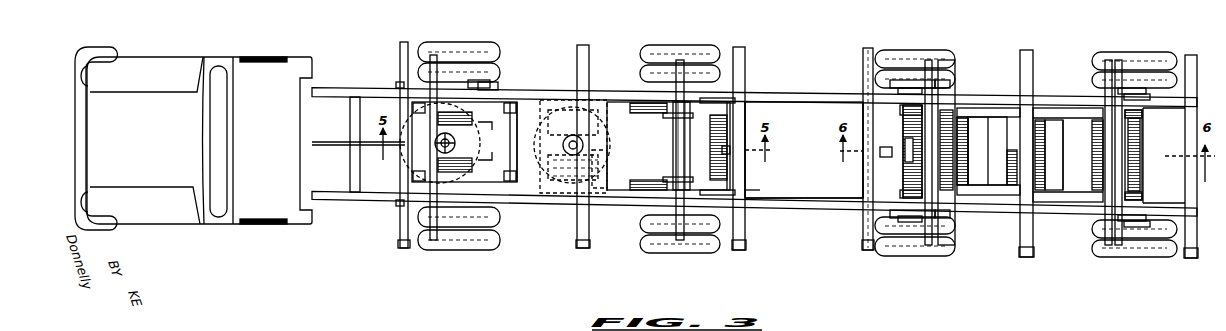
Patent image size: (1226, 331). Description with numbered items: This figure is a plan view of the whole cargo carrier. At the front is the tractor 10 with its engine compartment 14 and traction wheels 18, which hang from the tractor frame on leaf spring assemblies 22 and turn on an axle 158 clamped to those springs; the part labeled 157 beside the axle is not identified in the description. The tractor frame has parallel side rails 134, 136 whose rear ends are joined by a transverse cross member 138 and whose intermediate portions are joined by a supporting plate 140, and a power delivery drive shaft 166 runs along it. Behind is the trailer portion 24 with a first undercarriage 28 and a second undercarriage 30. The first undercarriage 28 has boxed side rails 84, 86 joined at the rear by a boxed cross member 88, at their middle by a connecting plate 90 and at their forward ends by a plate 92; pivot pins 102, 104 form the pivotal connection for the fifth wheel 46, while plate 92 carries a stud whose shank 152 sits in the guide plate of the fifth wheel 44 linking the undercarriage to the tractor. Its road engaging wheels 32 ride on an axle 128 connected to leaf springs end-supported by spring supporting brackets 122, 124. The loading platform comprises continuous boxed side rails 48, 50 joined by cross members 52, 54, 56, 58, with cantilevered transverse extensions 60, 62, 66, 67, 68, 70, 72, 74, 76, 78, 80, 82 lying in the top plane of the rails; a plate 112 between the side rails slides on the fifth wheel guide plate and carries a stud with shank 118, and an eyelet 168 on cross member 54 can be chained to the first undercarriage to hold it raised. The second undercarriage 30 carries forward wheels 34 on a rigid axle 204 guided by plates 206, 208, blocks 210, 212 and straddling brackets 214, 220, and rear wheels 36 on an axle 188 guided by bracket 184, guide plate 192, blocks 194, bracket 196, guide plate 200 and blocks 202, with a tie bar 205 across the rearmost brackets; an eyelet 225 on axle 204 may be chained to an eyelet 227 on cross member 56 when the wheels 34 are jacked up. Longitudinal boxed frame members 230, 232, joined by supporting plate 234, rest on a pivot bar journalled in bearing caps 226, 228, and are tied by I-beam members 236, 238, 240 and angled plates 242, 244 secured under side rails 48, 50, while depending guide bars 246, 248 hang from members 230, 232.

The tractor 10 is at (212, 54).
The engine compartment 14 is at (95, 111).
The traction wheels 18 is at (482, 46).
The spring suspension mechanisms 22 is at (490, 80).
The trailer portion 24 is at (792, 210).
The first undercarriage 28 is at (496, 100).
The second undercarriage 30 is at (1055, 108).
The road engaging wheels 32 is at (678, 50).
The road engaging wheels 34 is at (923, 255).
The road engaging wheels 36 is at (1146, 250).
The fifth wheel 44 is at (474, 172).
The fifth wheel 46 is at (665, 114).
The side rail 48 is at (806, 102).
The side rail 50 is at (822, 200).
The transverse cross member 52 is at (402, 176).
The transverse cross member 54 is at (748, 190).
The transverse cross member 56 is at (860, 120).
The transverse cross member 58 is at (1184, 116).
The transverse extension 60 is at (404, 42).
The transverse extension 62 is at (583, 45).
The transverse extension 66 is at (868, 48).
The transverse extension 67 is at (744, 50).
The transverse extension 68 is at (1028, 56).
The transverse extension 70 is at (1192, 55).
The transverse extension 72 is at (403, 248).
The transverse extension 74 is at (578, 248).
The transverse extension 76 is at (742, 250).
The transverse extension 78 is at (866, 250).
The transverse extension 80 is at (1026, 257).
The transverse extension 82 is at (1190, 258).
The boxed side rail 84 is at (620, 110).
The boxed side rail 86 is at (623, 190).
The transverse cross member 88 is at (746, 126).
The connecting plate 90 is at (549, 140).
The plate 92 is at (433, 150).
The pivot pin 102 is at (612, 174).
The pivot pin 104 is at (590, 100).
The plate 112 is at (554, 193).
The shank portion 118 is at (612, 155).
The spring supporting brackets 122 is at (660, 113).
The spring supporting brackets 124 is at (722, 98).
The axle 128 is at (683, 240).
The side rail 134 is at (330, 88).
The side rail 136 is at (330, 200).
The transverse cross member 138 is at (512, 102).
The supporting plate 140 is at (408, 112).
The shank 152 is at (478, 141).
The front axle 157 is at (434, 60).
The axle 158 is at (479, 80).
The power delivery drive shaft 166 is at (322, 141).
The eyelet 168 is at (724, 153).
The bracket 184 is at (1140, 94).
The axle 188 is at (1140, 156).
The guide plate 192 is at (1134, 88).
The guide blocks 194 is at (1136, 118).
The bracket 196 is at (1135, 222).
The guide plate 200 is at (1121, 240).
The blocks 202 is at (1138, 199).
The axle 204 is at (909, 150).
The tie bar 205 is at (1122, 160).
The guide plate 206 is at (911, 88).
The guide plate 208 is at (910, 240).
The guide block 210 is at (900, 108).
The guide block 212 is at (900, 196).
The bracket 214 is at (906, 75).
The bracket 220 is at (907, 222).
The eyelet 225 is at (905, 147).
The bearing cap 226 is at (945, 150).
The eyelet 227 is at (880, 155).
The bearing cap 228 is at (1022, 246).
The boxed frame member 230 is at (990, 108).
The boxed frame member 232 is at (963, 195).
The supporting plate 234 is at (1002, 146).
The I-beam member 236 is at (942, 115).
The I-beam member 238 is at (1046, 154).
The I-beam member 240 is at (1096, 195).
The plate 242 is at (1010, 158).
The plate 244 is at (1045, 182).
The guide bar 246 is at (935, 74).
The guide bar 248 is at (935, 222).